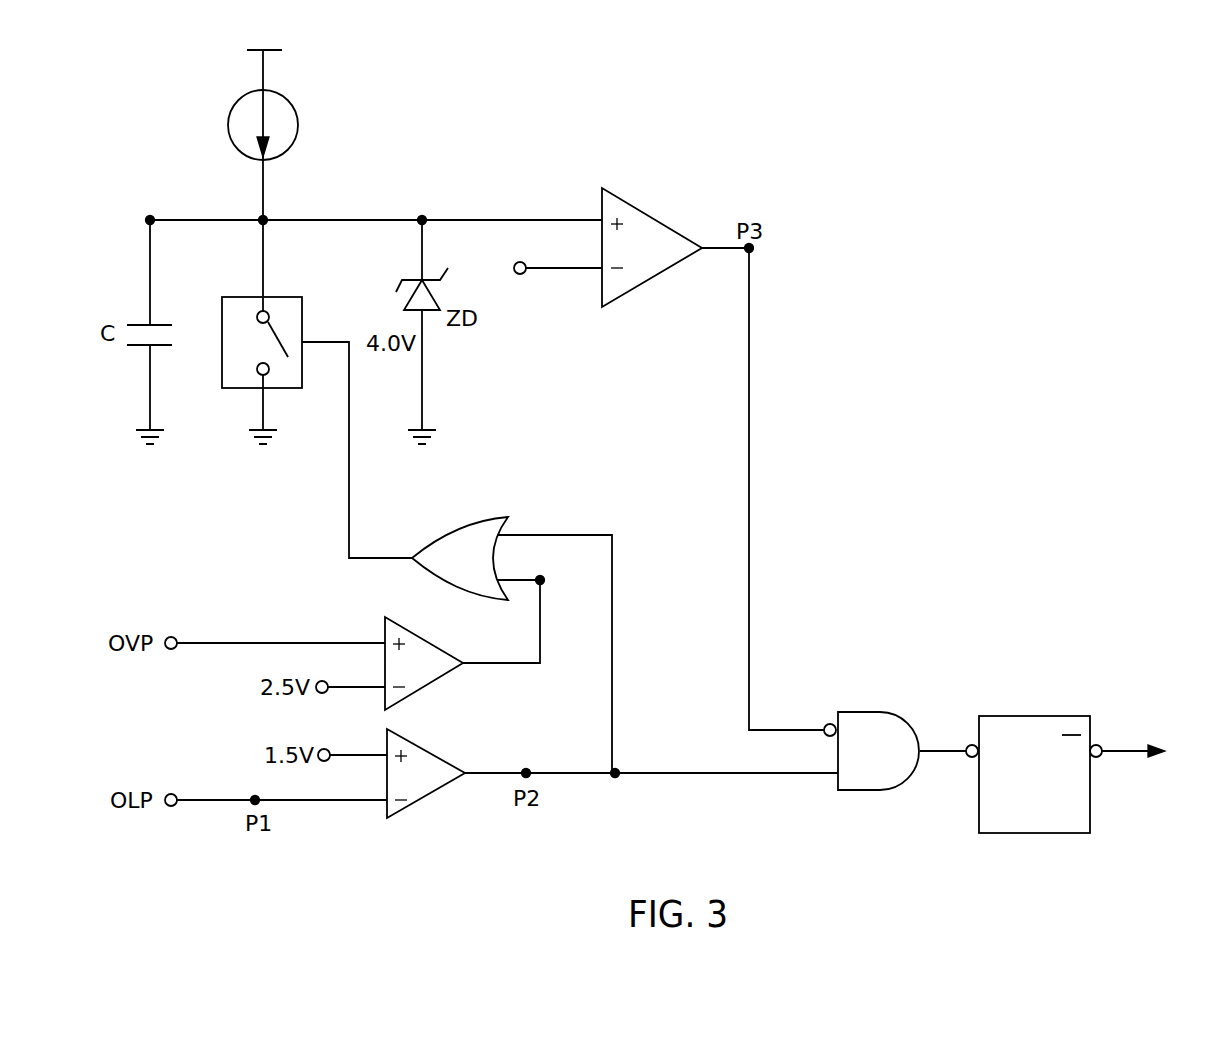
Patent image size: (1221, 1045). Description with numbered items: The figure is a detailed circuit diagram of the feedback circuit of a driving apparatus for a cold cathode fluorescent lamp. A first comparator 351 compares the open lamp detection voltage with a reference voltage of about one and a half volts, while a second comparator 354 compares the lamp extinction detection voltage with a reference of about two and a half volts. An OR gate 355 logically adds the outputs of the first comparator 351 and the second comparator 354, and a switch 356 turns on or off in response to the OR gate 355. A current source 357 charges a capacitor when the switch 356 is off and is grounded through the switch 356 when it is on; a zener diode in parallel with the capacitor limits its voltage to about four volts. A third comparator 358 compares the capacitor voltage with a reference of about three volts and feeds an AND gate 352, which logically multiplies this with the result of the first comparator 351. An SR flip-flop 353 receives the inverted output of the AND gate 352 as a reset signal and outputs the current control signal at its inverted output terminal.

The first comparator 351 is at (418, 800).
The AND gate 352 is at (872, 725).
The SR flip-flop 353 is at (1034, 725).
The second comparator 354 is at (443, 680).
The OR gate 355 is at (472, 515).
The switch 356 is at (222, 388).
The current source 357 is at (297, 110).
The third comparator 358 is at (645, 208).